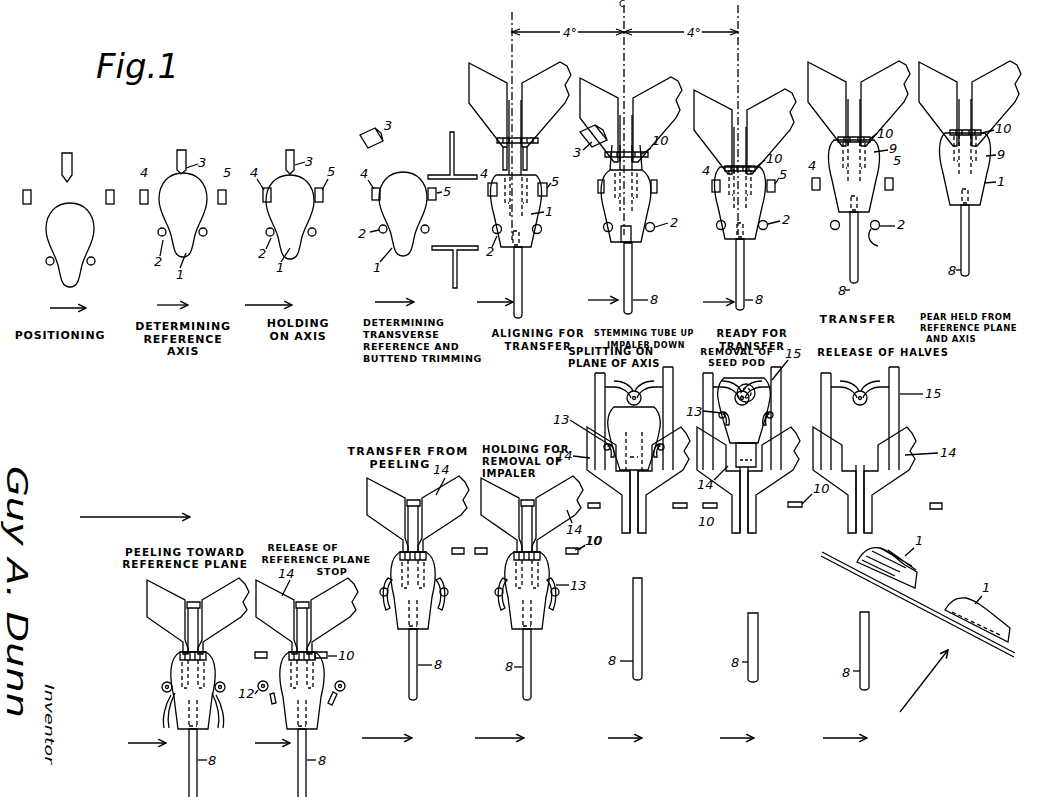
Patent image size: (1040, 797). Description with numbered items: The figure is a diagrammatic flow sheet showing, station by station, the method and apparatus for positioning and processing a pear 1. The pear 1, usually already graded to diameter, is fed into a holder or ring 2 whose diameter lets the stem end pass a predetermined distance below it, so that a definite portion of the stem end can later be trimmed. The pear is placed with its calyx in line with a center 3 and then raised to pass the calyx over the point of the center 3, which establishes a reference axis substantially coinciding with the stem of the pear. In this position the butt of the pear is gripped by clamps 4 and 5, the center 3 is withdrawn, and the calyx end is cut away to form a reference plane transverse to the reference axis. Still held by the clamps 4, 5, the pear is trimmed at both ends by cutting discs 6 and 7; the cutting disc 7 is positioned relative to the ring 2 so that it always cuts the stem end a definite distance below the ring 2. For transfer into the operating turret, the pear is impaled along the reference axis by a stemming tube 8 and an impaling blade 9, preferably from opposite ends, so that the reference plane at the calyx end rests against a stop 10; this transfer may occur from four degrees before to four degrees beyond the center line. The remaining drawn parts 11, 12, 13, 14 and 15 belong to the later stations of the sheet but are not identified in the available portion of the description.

The pear 1 is at (56, 243).
The holder or ring 2 is at (46, 262).
The center 3 is at (73, 170).
The clamp 4 is at (27, 189).
The clamp 5 is at (110, 189).
The cutting disc 6 is at (440, 176).
The cutting disc 7 is at (450, 247).
The stemming tube 8 is at (523, 275).
The impaling blade 9 is at (528, 165).
The stop 10 is at (530, 140).
The stem 11 is at (883, 238).
The peeling knives 12 is at (163, 689).
The knives 13 is at (386, 605).
The holder 14 is at (146, 608).
The splitting blade 15 is at (603, 389).